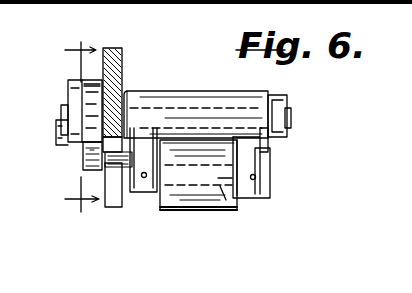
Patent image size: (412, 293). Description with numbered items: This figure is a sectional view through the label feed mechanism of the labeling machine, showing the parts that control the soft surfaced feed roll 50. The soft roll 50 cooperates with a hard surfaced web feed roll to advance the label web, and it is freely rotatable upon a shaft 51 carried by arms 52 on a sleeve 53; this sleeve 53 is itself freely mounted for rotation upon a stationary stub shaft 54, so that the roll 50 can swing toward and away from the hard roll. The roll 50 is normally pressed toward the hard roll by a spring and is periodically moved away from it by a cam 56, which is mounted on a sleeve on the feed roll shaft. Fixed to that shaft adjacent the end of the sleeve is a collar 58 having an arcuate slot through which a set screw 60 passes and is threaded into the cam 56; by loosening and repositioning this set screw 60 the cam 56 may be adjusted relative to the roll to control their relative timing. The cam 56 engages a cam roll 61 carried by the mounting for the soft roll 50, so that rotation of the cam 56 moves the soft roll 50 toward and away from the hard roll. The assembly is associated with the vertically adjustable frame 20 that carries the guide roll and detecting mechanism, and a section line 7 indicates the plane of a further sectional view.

The section line 7- 7 is at (71, 128).
The frame 20 is at (112, 66).
The soft surfaced feed roll 50 is at (220, 175).
The shaft 51 is at (237, 210).
The arms 52 is at (142, 145).
The sleeve 53 is at (150, 96).
The stationary stub shaft 54 is at (292, 112).
The cam 56 is at (97, 88).
The collar 58 is at (75, 97).
The set screw 60 is at (62, 142).
The cam roll 61 is at (85, 158).